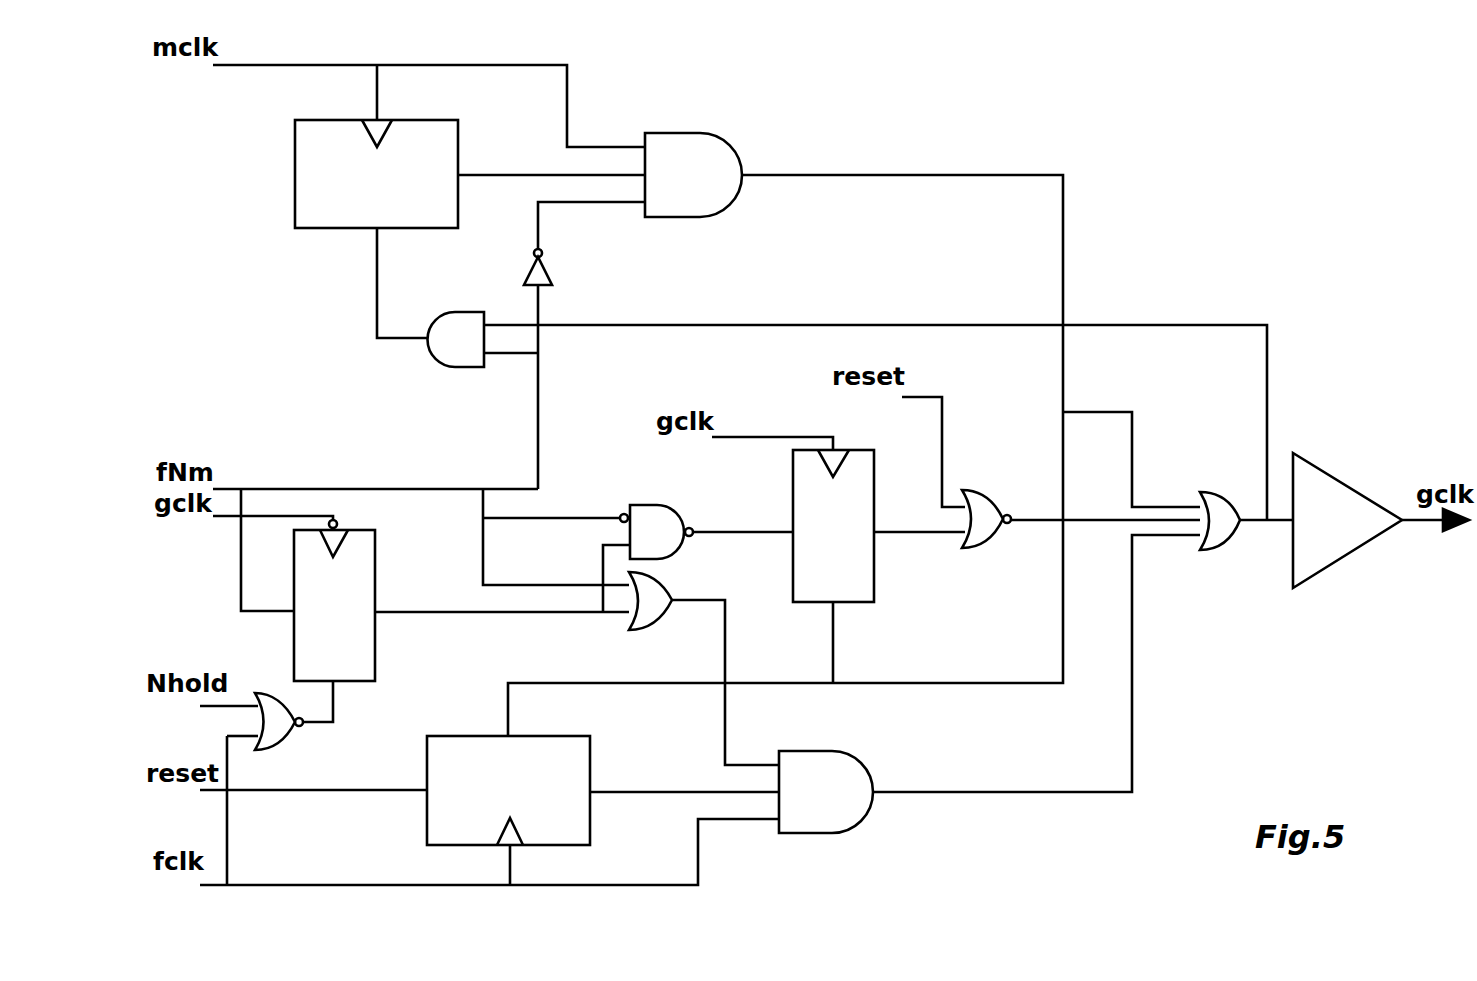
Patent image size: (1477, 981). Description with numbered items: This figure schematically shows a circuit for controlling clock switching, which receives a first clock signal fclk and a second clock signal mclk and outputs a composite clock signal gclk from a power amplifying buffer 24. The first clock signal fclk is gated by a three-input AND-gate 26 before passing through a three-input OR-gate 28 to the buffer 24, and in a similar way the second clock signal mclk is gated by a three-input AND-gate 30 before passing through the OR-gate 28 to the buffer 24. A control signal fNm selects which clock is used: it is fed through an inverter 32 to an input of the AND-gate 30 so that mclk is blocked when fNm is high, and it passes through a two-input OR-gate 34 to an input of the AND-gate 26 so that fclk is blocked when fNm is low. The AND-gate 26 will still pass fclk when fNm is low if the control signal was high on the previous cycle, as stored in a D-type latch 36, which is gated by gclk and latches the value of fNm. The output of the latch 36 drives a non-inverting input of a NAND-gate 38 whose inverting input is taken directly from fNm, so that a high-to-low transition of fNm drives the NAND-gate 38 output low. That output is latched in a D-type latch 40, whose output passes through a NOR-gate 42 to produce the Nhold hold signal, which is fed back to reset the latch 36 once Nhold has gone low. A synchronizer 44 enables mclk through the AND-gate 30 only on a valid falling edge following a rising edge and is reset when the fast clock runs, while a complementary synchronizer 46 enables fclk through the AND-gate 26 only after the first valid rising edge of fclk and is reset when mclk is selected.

The power amplifying buffer 24 is at (1318, 472).
The three-input AND-gate 26 is at (820, 833).
The three-input OR-gate 28 is at (1220, 543).
The three-input AND-gate 30 is at (678, 132).
The inverter 32 is at (550, 267).
The two-input OR-gate 34 is at (663, 620).
The D-type latch 36 is at (375, 592).
The NAND-gate 38 is at (647, 503).
The D-type latch 40 is at (874, 563).
The NOR-gate 42 is at (972, 493).
The synchronizer 44 is at (458, 143).
The complementary synchronizer 46 is at (590, 768).